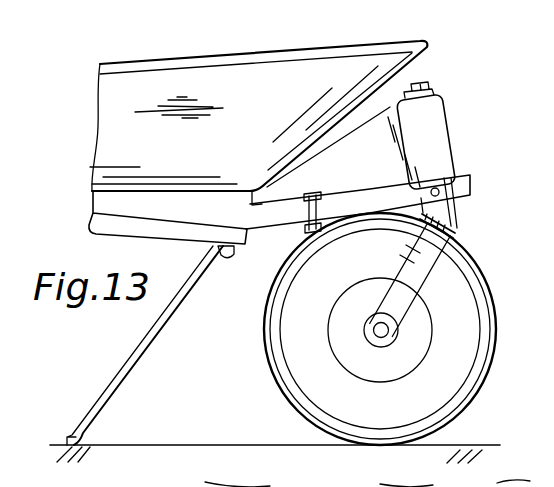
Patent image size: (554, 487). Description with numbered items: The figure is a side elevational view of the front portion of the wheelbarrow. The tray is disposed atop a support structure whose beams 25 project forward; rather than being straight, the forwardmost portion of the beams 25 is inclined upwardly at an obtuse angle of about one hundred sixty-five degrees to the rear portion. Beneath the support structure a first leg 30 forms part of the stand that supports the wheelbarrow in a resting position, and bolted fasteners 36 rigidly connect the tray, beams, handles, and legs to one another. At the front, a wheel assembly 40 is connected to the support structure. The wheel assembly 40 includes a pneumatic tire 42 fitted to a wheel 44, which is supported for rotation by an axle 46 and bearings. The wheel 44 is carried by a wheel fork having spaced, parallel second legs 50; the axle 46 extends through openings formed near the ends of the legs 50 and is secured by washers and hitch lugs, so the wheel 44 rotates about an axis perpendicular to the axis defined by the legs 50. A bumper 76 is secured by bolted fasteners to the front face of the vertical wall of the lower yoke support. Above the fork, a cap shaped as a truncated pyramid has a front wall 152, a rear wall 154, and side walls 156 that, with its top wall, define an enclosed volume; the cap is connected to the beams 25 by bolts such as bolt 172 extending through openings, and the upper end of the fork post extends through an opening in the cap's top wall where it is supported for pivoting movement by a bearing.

The beams 25 is at (193, 213).
The first leg 30 is at (142, 365).
The bolted fasteners 36 is at (224, 262).
The wheel assembly 40 is at (460, 238).
The pneumatic tire 42 is at (465, 320).
The wheel 44 is at (402, 367).
The axle 46 is at (378, 337).
The second legs 50 is at (403, 268).
The bumper 76 is at (462, 188).
The front wall 152 is at (454, 155).
The rear wall 154 is at (362, 142).
The side walls 156 is at (435, 155).
The bolt 172 is at (313, 193).